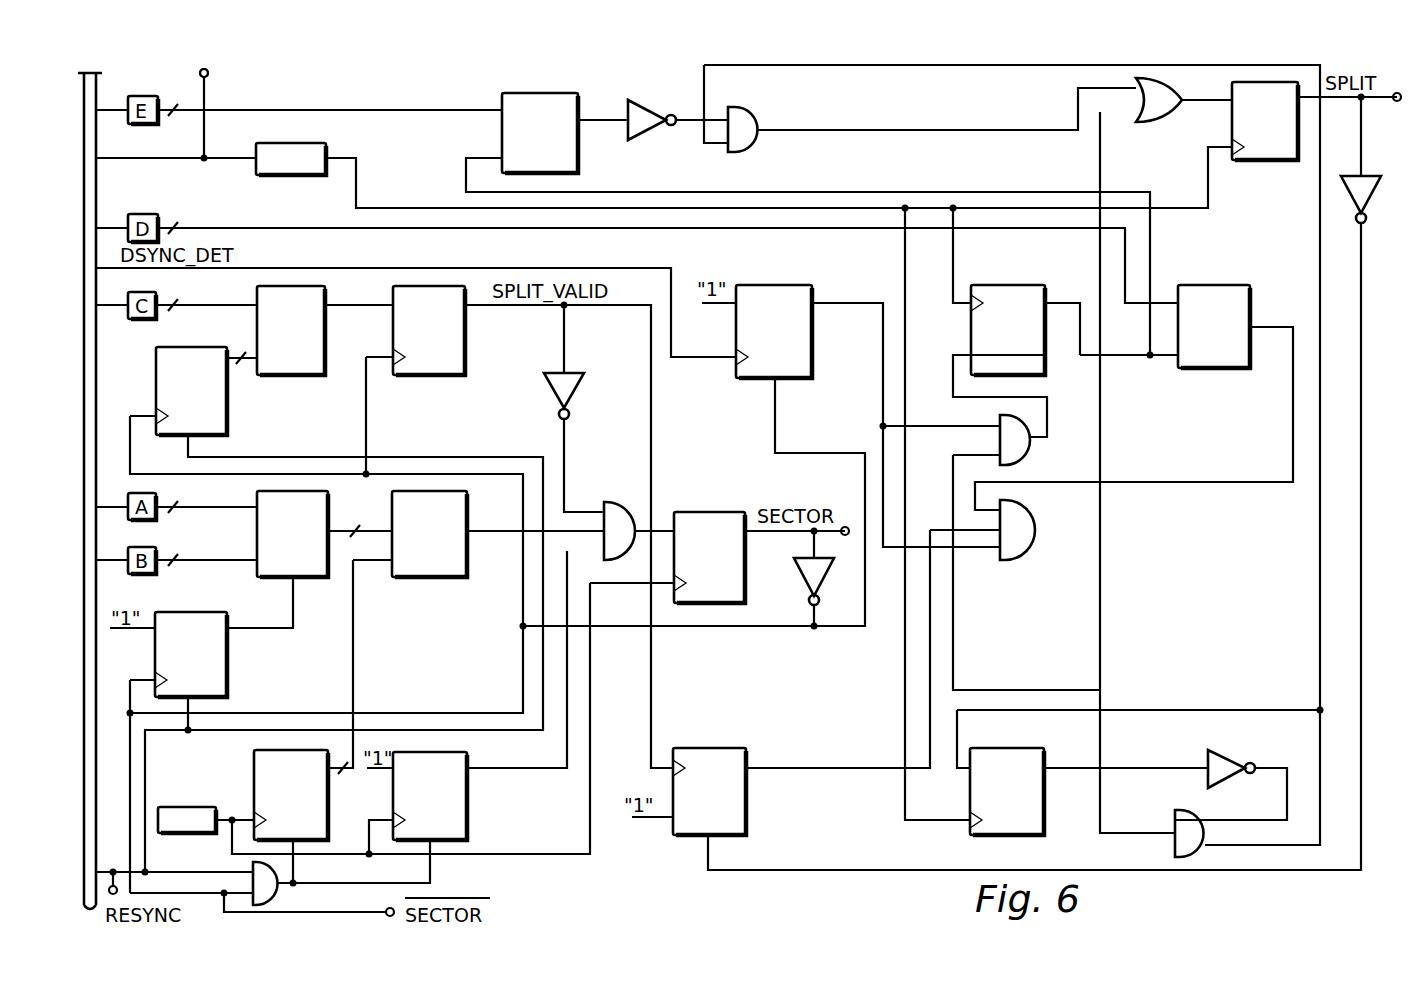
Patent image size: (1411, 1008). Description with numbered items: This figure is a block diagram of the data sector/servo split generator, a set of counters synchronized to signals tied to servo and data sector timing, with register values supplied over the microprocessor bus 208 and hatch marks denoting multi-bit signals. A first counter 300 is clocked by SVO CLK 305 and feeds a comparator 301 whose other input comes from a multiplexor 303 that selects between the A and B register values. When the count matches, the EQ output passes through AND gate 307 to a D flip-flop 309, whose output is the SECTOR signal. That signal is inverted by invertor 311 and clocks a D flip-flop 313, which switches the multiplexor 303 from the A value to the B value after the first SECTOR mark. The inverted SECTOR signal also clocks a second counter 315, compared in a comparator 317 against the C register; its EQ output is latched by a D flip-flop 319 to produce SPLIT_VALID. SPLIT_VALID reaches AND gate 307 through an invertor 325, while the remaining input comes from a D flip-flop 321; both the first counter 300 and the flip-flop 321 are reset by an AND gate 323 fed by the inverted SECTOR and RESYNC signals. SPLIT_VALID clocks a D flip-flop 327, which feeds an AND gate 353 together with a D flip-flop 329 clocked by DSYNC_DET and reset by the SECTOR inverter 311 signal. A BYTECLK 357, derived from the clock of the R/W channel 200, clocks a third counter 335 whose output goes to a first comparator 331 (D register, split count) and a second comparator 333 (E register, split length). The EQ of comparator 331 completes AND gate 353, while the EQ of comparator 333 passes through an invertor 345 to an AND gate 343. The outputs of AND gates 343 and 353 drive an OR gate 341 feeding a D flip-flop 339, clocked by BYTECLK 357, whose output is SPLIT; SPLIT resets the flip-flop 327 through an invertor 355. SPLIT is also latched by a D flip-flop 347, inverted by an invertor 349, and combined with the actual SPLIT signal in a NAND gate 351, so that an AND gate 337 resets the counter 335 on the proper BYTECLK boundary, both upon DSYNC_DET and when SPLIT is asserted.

The R/W channel 200 is at (209, 74).
The microprocessor bus 208 is at (98, 90).
The first counter 300 is at (254, 770).
The comparator 301 is at (392, 520).
The multiplexor 303 is at (261, 494).
The SVO CLK 305 is at (173, 807).
The AND gate 307 is at (626, 483).
The D flip-flop 309 is at (704, 512).
The invertor 311 is at (792, 584).
The D flip-flop 313 is at (179, 612).
The second counter 315 is at (185, 347).
The comparator 317 is at (325, 300).
The D flip-flop 319 is at (465, 315).
The D flip-flop 321 is at (467, 764).
The AND gate 323 is at (278, 892).
The invertor 325 is at (544, 392).
The D flip-flop 327 is at (717, 748).
The D flip-flop 329 is at (760, 285).
The first comparator 331 is at (1214, 285).
The second comparator 333 is at (532, 93).
The third counter 335 is at (1004, 285).
The AND gate 337 is at (1026, 448).
The D flip-flop 339 is at (1250, 168).
The OR gate 341 is at (1170, 90).
The AND gate 343 is at (758, 111).
The invertor 345 is at (638, 100).
The D flip-flop 347 is at (1012, 748).
The invertor 349 is at (1235, 750).
The NAND gate 351 is at (1176, 814).
The AND gate 353 is at (1028, 512).
The invertor 355 is at (1372, 176).
The BYTECLK 357 is at (316, 145).